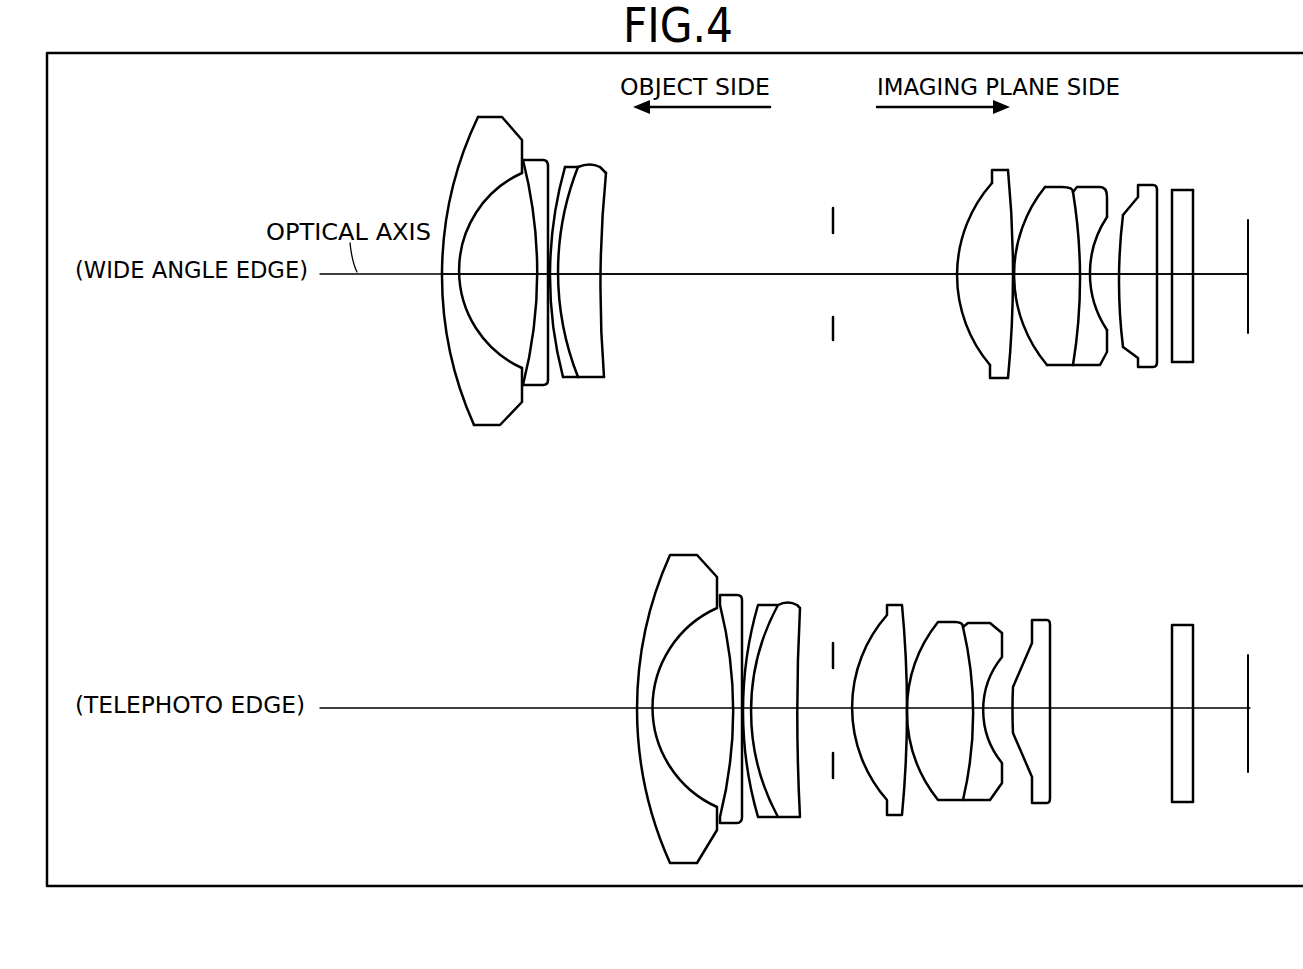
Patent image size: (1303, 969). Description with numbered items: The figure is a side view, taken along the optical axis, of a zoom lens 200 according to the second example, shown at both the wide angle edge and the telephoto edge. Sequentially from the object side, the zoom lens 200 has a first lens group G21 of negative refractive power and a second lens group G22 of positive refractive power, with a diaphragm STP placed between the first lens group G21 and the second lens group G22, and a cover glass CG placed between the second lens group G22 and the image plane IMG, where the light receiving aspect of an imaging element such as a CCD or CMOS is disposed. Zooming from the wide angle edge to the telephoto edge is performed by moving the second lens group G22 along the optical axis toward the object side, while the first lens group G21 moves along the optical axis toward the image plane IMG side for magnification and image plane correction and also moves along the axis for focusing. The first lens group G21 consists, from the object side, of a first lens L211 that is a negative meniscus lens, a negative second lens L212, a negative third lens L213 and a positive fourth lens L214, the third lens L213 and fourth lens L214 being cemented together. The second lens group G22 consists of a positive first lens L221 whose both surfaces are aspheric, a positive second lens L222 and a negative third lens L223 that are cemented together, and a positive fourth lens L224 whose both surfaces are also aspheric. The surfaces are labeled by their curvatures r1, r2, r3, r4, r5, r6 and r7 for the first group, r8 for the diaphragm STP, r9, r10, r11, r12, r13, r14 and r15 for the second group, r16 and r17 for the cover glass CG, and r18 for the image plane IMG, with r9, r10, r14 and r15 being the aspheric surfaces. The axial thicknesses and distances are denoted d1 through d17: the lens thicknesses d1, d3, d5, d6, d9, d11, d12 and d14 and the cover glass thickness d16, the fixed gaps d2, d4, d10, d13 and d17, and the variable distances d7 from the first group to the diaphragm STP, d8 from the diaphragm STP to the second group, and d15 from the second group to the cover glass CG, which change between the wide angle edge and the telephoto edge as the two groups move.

The zoom lens 200 is at (388, 105).
The first lens group G21 is at (655, 496).
The second lens group G22 is at (1170, 490).
The first lens L211 is at (492, 414).
The second lens L212 is at (533, 388).
The third lens L213 is at (577, 382).
The fourth lens L214 is at (610, 370).
The first lens L221 is at (997, 381).
The second lens L222 is at (1052, 374).
The third lens L223 is at (1088, 374).
The fourth lens L224 is at (1128, 368).
The diaphragm STP is at (833, 215).
The cover glass CG is at (1183, 364).
The image plane IMG is at (1248, 334).
The curvature of first surface r1 is at (450, 197).
The curvature of second surface r2 is at (497, 190).
The curvature of third surface r3 is at (509, 176).
The curvature of fourth surface r4 is at (544, 160).
The curvature of fifth surface r5 is at (557, 168).
The curvature of sixth surface r6 is at (583, 167).
The curvature of seventh surface r7 is at (607, 188).
The curvature of eighth surface r8 is at (837, 217).
The curvature of ninth surface r9 is at (962, 235).
The curvature of tenth surface r10 is at (1008, 205).
The curvature of eleventh surface r11 is at (1038, 200).
The lens surface r12 is at (1073, 205).
The lens surface r13 is at (1090, 220).
The curvature of fourteenth surface r14 is at (1123, 215).
The curvature of fifteenth surface r15 is at (1153, 208).
The curvature of sixteenth surface r16 is at (1178, 222).
The cover glass surface r17 is at (1195, 223).
The curvature of eighteenth surface r18 is at (1250, 230).
The thickness d1 is at (450, 276).
The distance d2 is at (490, 276).
The thickness d3 is at (537, 315).
The distance d4 is at (535, 376).
The thickness d5 is at (570, 313).
The thickness d6 is at (580, 276).
The distance d7 is at (718, 277).
The distance d8 is at (877, 277).
The thickness d9 is at (987, 277).
The distance d10 is at (1013, 310).
The thickness d11 is at (1038, 325).
The thickness d12 is at (1078, 300).
The distance d13 is at (1095, 335).
The thickness d14 is at (1130, 330).
The distance d15 is at (1166, 300).
The thickness d16 is at (1185, 290).
The distance d17 is at (1227, 280).